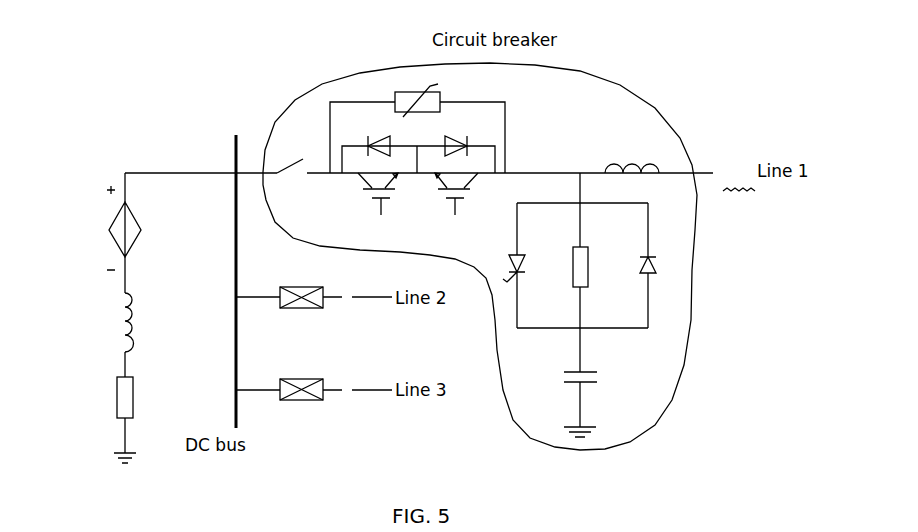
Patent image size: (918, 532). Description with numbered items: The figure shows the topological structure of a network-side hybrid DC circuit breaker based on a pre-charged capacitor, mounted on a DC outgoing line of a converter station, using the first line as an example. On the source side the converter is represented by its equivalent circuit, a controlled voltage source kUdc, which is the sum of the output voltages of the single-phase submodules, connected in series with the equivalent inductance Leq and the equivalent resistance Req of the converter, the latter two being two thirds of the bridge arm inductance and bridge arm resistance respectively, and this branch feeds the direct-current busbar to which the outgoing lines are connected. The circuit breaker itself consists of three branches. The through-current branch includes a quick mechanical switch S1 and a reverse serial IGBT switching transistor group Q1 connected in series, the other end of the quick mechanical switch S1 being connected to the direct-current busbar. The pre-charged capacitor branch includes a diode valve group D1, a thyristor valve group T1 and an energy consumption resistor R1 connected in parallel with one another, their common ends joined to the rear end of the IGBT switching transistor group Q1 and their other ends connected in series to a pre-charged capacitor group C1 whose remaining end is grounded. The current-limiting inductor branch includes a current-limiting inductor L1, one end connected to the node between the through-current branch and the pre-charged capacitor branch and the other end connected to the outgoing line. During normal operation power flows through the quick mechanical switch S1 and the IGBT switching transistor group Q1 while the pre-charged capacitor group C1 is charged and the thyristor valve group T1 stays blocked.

The controlled voltage source kUdc is at (103, 228).
The equivalent inductance Leq is at (106, 322).
The equivalent resistance Req is at (105, 398).
The quick mechanical switch S1 is at (290, 185).
The IGBT switching transistor group Q1 is at (418, 202).
The current-limiting inductor L1 is at (632, 157).
The thyristor valve group T1 is at (529, 265).
The energy consumption resistor R1 is at (596, 267).
The diode valve group D1 is at (660, 265).
The pre-charged capacitor group C1 is at (593, 384).